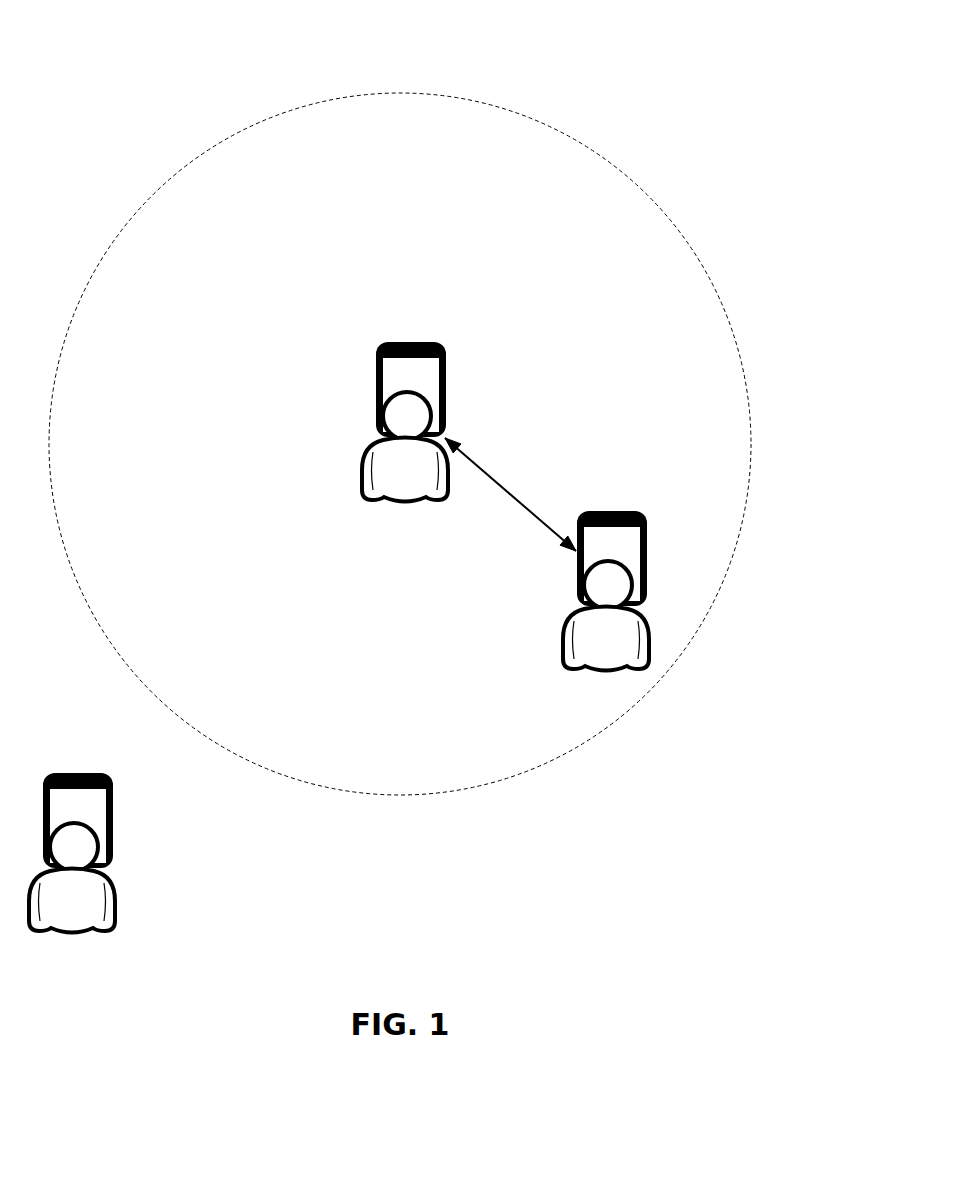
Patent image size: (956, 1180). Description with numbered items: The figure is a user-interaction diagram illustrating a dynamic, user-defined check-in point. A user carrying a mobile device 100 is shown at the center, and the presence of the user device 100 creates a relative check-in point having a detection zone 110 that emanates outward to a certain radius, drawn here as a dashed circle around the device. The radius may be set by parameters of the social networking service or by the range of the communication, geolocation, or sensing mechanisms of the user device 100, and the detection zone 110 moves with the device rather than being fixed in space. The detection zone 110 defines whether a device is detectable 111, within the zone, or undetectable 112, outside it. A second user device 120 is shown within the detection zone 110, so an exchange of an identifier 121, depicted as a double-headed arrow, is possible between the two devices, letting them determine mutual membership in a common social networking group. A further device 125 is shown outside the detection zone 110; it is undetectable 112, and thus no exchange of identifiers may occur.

The mobile device 100 is at (447, 419).
The detection zone 110 is at (588, 149).
The detectable 111 is at (390, 720).
The undetectable 112 is at (388, 838).
The user device 120 is at (648, 587).
The identifier 121 is at (510, 492).
The device 125 is at (113, 850).